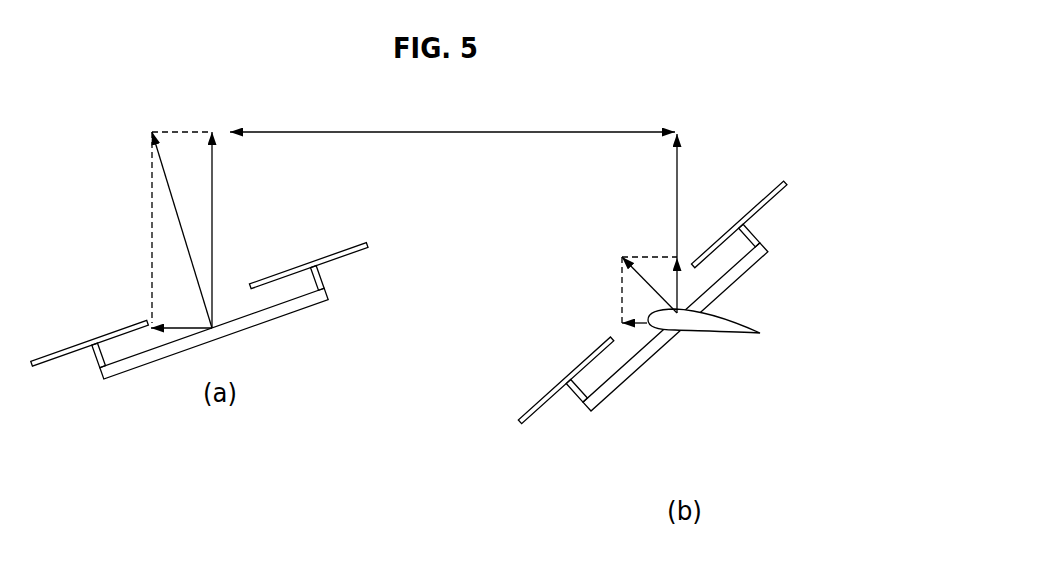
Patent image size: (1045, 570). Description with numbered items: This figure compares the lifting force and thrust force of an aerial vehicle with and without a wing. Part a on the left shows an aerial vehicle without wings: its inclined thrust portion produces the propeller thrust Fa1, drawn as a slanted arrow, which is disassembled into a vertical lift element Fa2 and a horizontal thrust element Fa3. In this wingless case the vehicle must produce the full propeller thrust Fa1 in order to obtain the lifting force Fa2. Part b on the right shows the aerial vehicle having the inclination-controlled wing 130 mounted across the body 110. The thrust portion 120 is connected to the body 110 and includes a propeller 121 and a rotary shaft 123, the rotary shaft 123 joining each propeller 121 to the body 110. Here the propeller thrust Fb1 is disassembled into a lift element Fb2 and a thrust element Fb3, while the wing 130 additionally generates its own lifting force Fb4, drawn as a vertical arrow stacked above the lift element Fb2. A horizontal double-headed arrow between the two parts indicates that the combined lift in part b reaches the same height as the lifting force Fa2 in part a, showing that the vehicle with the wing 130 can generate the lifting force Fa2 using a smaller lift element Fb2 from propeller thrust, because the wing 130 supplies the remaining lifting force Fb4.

The body 110 is at (648, 351).
The thrust portion 120 is at (660, 311).
The propeller 121 is at (780, 195).
The rotary shaft 123 is at (757, 232).
The wing 130 is at (717, 330).
The propeller thrust Fa1 is at (166, 189).
The lift element Fa2 is at (236, 230).
The thrust element Fa3 is at (177, 327).
The propeller thrust Fb1 is at (650, 286).
The lift element Fb2 is at (681, 285).
The thrust element Fb3 is at (647, 319).
The lifting force generated by the wing Fb4 is at (678, 167).